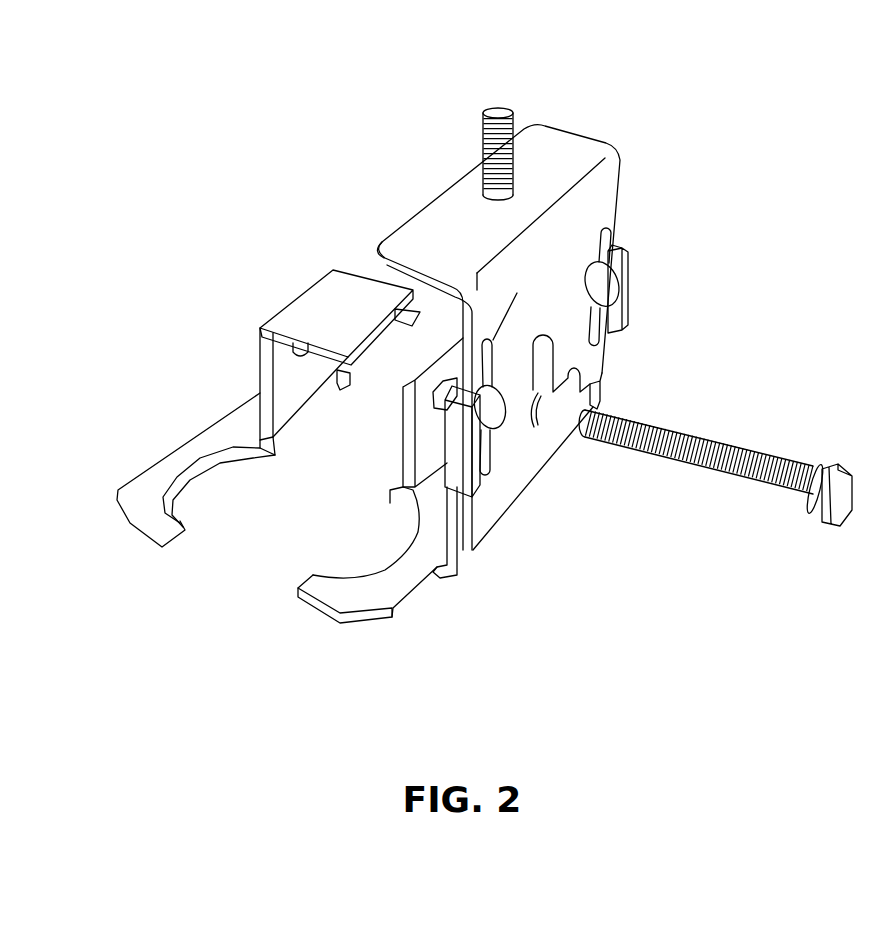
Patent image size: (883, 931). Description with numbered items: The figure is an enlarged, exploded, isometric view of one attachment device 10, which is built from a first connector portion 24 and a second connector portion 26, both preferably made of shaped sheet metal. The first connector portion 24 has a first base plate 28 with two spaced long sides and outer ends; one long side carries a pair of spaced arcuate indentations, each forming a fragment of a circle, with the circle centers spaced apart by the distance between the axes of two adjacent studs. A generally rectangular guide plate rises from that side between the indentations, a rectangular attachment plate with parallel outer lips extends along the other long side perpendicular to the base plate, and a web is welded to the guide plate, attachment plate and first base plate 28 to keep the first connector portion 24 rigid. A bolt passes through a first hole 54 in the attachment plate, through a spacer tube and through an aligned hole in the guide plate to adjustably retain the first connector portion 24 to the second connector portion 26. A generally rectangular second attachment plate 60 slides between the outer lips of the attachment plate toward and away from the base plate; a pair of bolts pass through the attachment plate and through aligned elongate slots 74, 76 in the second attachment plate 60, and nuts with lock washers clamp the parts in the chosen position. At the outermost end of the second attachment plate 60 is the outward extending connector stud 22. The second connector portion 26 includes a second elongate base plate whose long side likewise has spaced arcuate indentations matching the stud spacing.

The attachment device 10 is at (705, 129).
The connector stud 22 is at (510, 102).
The first connector portion 24 is at (503, 520).
The second connector portion 26 is at (187, 434).
The first base plate 28 is at (358, 625).
The first hole 54 is at (742, 447).
The second attachment plate 60 is at (618, 148).
The elongate slot 74 is at (517, 293).
The elongate slot 76 is at (612, 238).